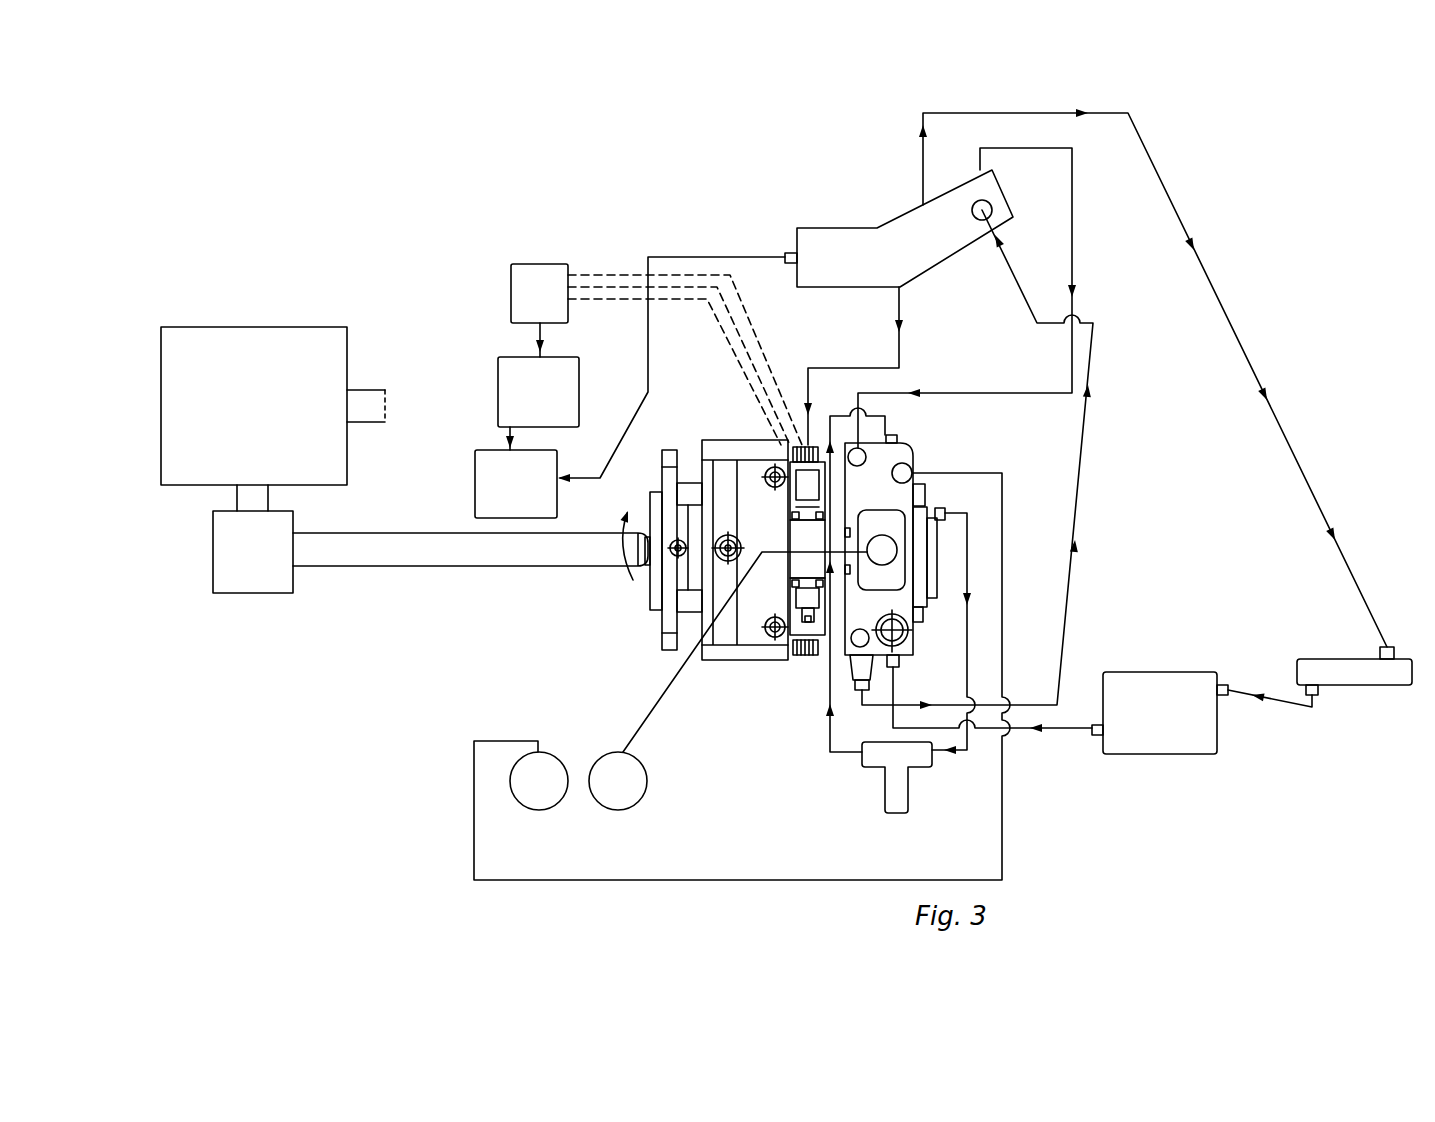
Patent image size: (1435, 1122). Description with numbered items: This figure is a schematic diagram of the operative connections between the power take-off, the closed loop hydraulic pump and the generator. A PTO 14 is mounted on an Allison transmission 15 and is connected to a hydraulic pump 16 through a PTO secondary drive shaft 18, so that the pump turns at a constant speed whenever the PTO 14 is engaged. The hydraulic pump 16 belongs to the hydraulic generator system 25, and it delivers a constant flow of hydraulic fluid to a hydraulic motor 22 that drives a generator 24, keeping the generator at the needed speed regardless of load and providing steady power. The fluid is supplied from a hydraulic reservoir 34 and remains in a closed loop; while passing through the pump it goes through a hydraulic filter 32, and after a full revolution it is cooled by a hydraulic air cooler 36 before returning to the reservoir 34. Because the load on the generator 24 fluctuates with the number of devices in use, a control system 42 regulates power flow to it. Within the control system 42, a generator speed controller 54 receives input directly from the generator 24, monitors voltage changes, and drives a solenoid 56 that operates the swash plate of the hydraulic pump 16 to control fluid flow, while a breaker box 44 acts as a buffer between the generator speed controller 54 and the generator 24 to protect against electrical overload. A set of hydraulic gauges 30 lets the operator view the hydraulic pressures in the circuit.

The PTO 14 is at (227, 580).
The Allison transmission 15 is at (220, 347).
The hydraulic pump 16 is at (752, 617).
The PTO secondary drive shaft 18 is at (472, 558).
The hydraulic motor 22 is at (842, 262).
The generator 24 is at (510, 490).
The hydraulic generator system 25 is at (1037, 773).
The hydraulic gauges 30 is at (618, 781).
The hydraulic filter 32 is at (897, 755).
The hydraulic reservoir 34 is at (1163, 717).
The hydraulic air cooler 36 is at (1353, 668).
The control system 42 is at (467, 315).
The breaker box 44 is at (532, 393).
The generator speed controller 54 is at (537, 290).
The solenoid 56 is at (808, 480).